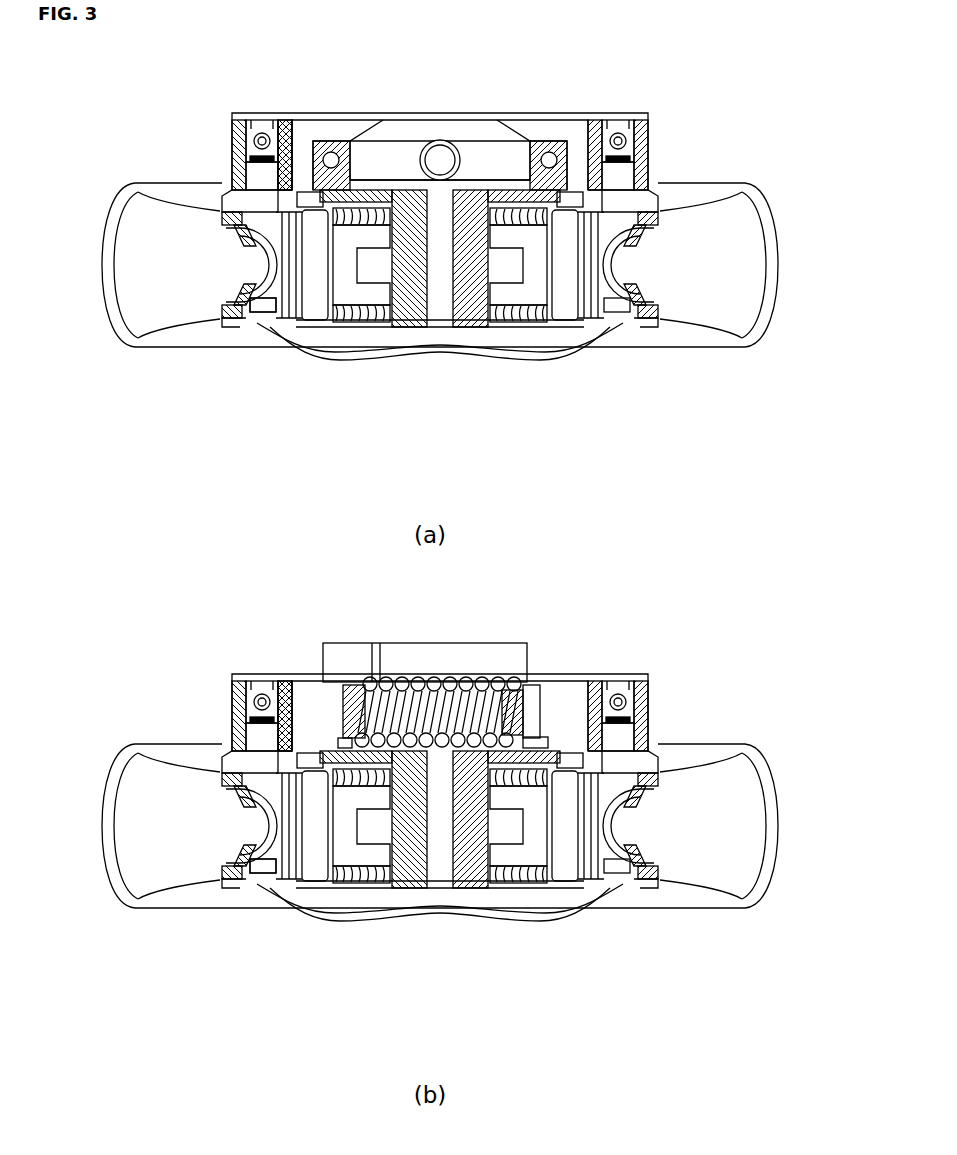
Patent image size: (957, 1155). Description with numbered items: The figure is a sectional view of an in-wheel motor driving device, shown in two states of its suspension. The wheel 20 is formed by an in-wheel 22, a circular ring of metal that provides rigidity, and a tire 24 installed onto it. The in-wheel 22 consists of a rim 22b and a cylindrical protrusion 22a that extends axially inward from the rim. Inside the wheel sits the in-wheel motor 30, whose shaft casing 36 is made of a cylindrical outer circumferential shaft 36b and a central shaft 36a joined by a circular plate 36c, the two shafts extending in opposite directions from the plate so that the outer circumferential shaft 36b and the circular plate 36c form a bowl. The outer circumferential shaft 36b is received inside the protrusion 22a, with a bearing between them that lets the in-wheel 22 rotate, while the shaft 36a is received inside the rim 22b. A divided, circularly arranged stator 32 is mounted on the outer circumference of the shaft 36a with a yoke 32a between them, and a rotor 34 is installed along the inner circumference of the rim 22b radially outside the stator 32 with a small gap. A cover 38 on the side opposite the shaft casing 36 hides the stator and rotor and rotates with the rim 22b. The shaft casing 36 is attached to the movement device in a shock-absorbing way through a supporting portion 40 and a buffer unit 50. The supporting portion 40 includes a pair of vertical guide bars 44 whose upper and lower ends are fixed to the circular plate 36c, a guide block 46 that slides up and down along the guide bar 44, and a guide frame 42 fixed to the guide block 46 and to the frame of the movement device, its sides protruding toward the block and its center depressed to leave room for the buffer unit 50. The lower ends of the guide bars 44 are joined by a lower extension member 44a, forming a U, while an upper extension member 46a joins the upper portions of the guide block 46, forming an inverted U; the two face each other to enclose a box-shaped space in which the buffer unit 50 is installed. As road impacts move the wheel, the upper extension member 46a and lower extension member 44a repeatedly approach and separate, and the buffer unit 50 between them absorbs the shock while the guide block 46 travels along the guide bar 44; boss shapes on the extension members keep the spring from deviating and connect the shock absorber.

The wheel 20 is at (697, 352).
The in-wheel 22 is at (236, 736).
The protrusion 22a is at (235, 175).
The rim 22b is at (243, 228).
The tire 24 is at (118, 230).
The in-wheel motor 30 is at (345, 335).
The stator 32 is at (314, 308).
The yoke 32a is at (493, 270).
The rotor 34 is at (272, 318).
The shaft casing 36 is at (318, 128).
The shaft 36a is at (413, 262).
The outer circumferential shaft 36b is at (288, 126).
The circular plate 36c is at (256, 138).
The cover 38 is at (521, 340).
The supporting portion 40 is at (540, 122).
The guide frame 42 is at (478, 118).
The guide bar 44 is at (622, 148).
The lower extension member 44a is at (512, 150).
The guide block 46 is at (556, 157).
The upper extension member 46a is at (530, 683).
The buffer unit 50 is at (432, 143).